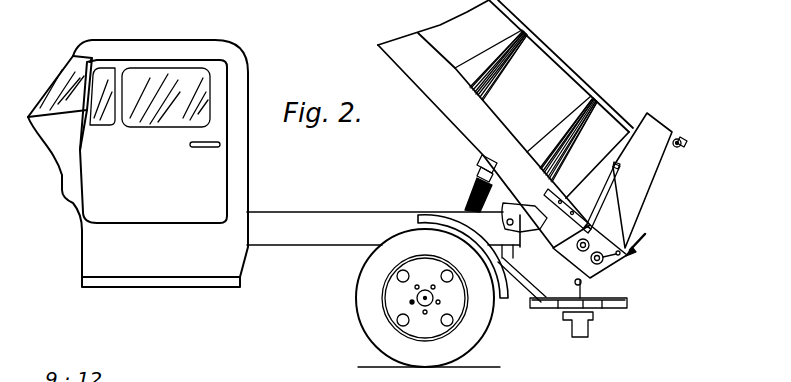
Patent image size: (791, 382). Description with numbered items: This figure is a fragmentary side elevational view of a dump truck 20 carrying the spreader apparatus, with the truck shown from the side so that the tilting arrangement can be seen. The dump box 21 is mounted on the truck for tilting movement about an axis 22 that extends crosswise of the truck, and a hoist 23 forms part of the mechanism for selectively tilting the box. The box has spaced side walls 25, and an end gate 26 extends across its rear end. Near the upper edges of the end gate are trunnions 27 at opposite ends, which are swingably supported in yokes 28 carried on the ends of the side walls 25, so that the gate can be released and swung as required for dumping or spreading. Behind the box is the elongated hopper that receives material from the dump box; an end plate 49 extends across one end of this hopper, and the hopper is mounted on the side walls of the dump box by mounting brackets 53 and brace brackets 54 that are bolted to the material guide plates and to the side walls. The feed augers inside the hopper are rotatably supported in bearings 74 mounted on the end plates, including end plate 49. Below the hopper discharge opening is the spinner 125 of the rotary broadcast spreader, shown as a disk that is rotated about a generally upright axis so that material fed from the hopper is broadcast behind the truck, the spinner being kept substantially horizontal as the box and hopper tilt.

The dump truck 20 is at (258, 210).
The dump box 21 is at (580, 70).
The axis 22 is at (514, 222).
The hoist 23 is at (472, 168).
The side walls 25 is at (538, 58).
The end gate 26 is at (662, 176).
The trunnions 27 is at (683, 146).
The yokes 28 is at (683, 136).
The end plate 49 is at (603, 277).
The mounting brackets 53 is at (573, 188).
The brace brackets 54 is at (604, 199).
The bearings 74 is at (631, 253).
The spinner 125 is at (627, 305).